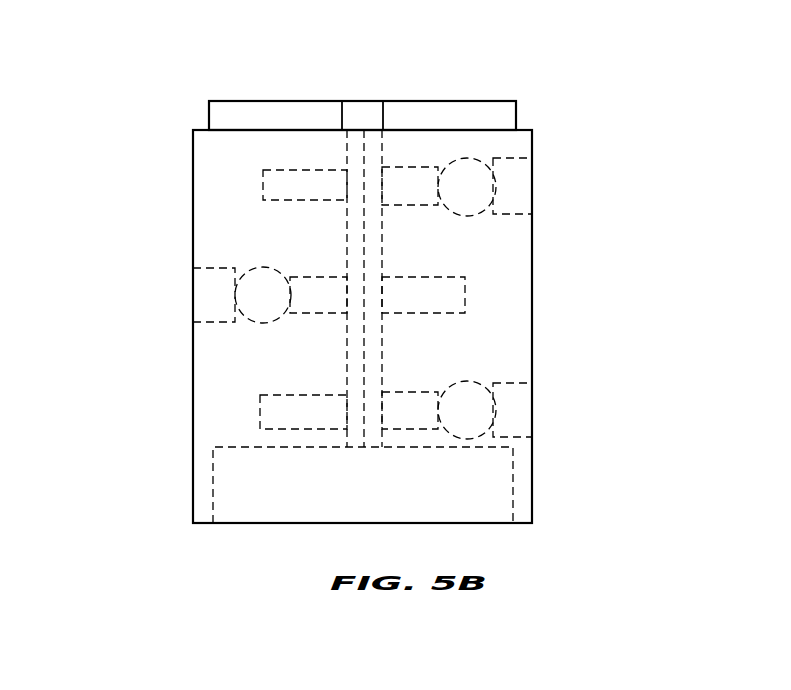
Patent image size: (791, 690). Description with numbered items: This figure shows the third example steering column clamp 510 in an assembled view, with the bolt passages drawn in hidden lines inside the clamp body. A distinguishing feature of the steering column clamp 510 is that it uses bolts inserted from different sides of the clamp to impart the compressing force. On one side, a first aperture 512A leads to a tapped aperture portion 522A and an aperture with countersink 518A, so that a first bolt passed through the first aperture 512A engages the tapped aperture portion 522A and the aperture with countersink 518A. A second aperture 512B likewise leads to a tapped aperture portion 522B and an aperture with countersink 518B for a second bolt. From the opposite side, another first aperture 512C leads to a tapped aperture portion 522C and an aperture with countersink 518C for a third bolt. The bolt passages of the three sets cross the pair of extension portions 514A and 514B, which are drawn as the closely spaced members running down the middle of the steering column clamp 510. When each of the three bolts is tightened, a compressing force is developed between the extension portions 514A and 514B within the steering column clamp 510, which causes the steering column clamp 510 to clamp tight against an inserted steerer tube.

The steering column clamp 510 is at (222, 513).
The first aperture 512A is at (520, 410).
The second aperture 512B is at (520, 186).
The first aperture 512C is at (200, 281).
The extension portion 514A is at (370, 140).
The extension portion 514B is at (352, 140).
The aperture with countersink 518A is at (460, 383).
The aperture with countersink 518B is at (462, 158).
The aperture with countersink 518C is at (265, 267).
The tapped aperture portion 522A is at (263, 402).
The tapped aperture portion 522B is at (263, 180).
The tapped aperture portion 522C is at (466, 296).